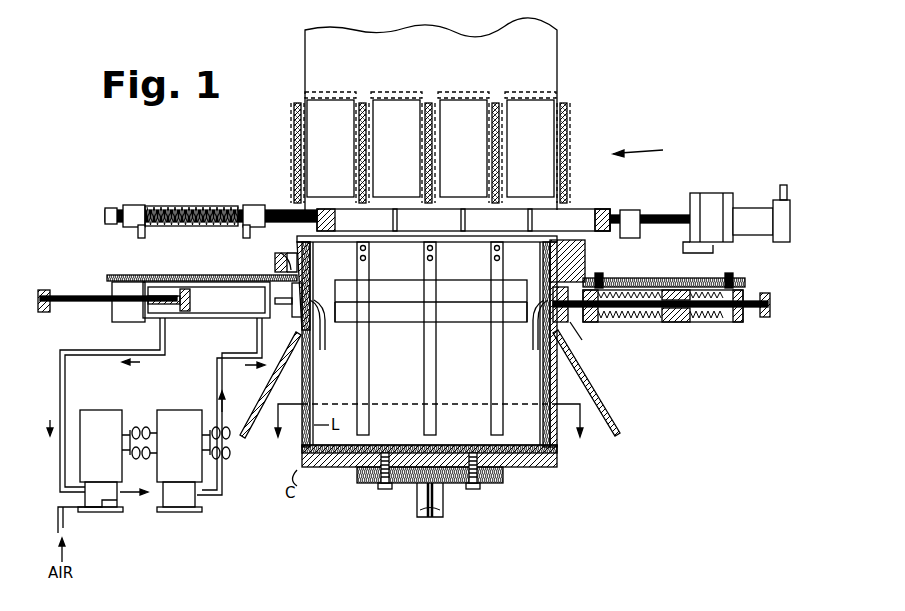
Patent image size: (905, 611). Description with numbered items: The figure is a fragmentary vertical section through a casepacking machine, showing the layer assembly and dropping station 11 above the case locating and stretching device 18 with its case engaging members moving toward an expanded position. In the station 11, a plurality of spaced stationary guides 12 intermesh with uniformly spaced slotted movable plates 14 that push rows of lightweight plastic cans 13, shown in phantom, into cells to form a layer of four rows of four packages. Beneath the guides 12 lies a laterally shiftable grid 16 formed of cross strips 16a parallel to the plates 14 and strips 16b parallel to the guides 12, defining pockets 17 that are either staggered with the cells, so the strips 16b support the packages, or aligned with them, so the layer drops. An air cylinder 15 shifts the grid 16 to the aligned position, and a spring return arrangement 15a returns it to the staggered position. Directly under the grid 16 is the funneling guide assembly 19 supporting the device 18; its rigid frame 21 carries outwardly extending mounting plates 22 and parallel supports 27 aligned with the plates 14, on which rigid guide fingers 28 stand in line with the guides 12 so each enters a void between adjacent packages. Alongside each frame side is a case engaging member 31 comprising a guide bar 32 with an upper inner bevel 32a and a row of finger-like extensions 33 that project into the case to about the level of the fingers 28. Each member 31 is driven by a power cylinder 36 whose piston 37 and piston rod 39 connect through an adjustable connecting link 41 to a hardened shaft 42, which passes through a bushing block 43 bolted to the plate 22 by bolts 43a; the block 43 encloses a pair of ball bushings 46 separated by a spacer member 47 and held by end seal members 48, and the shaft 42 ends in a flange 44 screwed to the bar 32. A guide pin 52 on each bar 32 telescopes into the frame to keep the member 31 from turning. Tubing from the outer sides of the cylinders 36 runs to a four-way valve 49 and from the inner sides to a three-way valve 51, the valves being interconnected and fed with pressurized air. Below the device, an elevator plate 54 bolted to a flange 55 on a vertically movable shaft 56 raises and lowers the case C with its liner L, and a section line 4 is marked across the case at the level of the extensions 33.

The section line 4- 4 is at (428, 432).
The layer assembly and dropping station 11 is at (647, 146).
The stationary guides 12 is at (297, 103).
The lightweight plastic cans 13 is at (327, 92).
The movable plates 14 is at (437, 54).
The air cylinder 15 is at (740, 193).
The spring return arrangement 15a is at (181, 204).
The auxiliary grid-like structure 16 is at (601, 209).
The cross strips 16a is at (507, 230).
The strips 16b is at (317, 231).
The pockets 17 is at (372, 214).
The case locating and stretching device 18 is at (616, 364).
The funneling guide assembly 19 is at (586, 260).
The rigid frame 21 is at (275, 260).
The mounting plate 22 is at (222, 275).
The supports 27 is at (407, 274).
The guide fingers 28 is at (424, 381).
The case engaging member 31 is at (310, 292).
The guide bar 32 is at (318, 326).
The bevel 32a is at (312, 268).
The finger-like extensions 33 is at (313, 381).
The power cylinder 36 is at (215, 318).
The piston 37 is at (186, 289).
The piston rod 39 is at (157, 296).
The adjustable connecting link 41 is at (43, 290).
The shaft 42 is at (770, 304).
The bushing block 43 is at (122, 322).
The bolts 43a is at (603, 276).
The flange 44 is at (290, 315).
The ball bushings 46 is at (625, 318).
The spacer member 47 is at (676, 322).
The end caps 48 is at (590, 322).
The four-way valve 49 is at (109, 454).
The three-way valve 51 is at (188, 454).
The guide pin 52 is at (281, 253).
The elevator plate 54 is at (550, 465).
The flange 55 is at (500, 481).
The shaft 56 is at (436, 505).